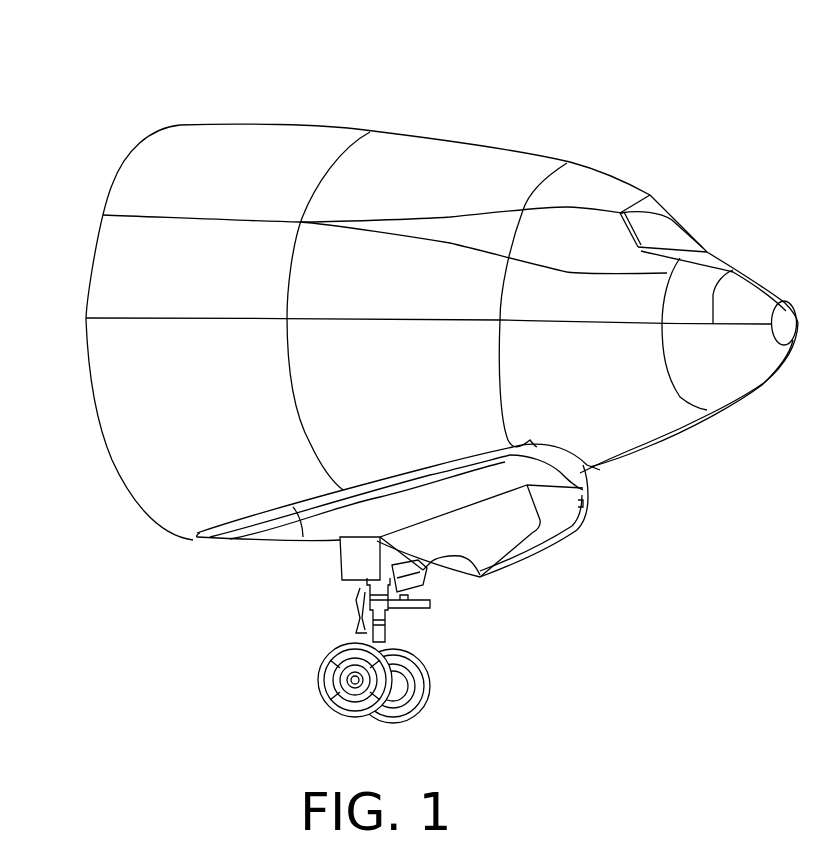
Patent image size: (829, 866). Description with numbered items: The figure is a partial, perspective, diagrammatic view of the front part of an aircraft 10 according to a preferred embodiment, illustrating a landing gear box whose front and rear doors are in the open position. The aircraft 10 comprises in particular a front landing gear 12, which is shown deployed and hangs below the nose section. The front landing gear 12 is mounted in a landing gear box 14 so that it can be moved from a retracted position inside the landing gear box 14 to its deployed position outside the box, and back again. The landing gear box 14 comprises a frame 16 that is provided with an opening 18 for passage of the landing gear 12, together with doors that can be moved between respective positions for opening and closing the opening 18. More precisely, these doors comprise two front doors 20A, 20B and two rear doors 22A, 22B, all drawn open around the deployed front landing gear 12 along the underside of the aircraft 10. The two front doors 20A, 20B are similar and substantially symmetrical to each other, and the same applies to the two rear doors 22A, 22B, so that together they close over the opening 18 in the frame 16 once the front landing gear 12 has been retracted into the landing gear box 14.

The aircraft 10 is at (429, 332).
The front landing gear 12 is at (390, 623).
The landing gear box 14 is at (602, 483).
The frame 16 is at (350, 513).
The opening 18 is at (585, 495).
The front door 20A is at (498, 527).
The front door 20B is at (563, 543).
The rear door 22A is at (353, 562).
The rear door 22B is at (423, 582).